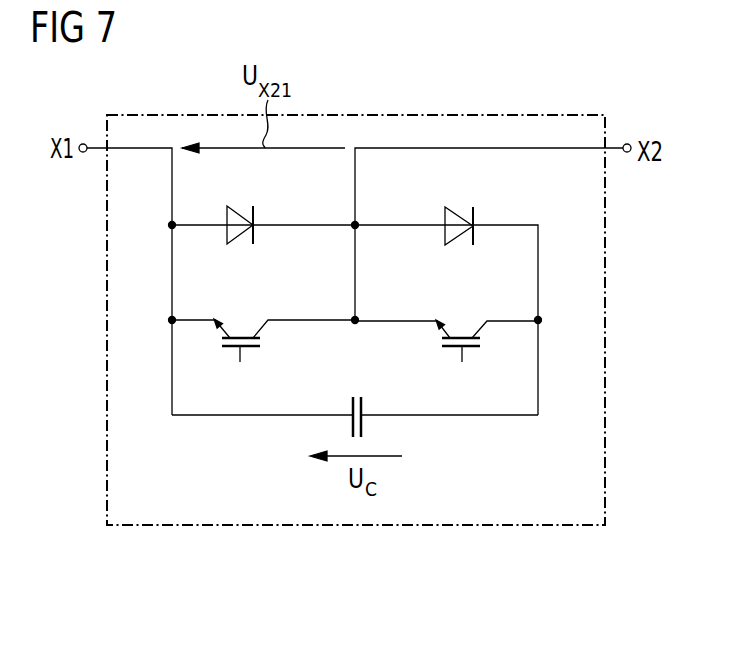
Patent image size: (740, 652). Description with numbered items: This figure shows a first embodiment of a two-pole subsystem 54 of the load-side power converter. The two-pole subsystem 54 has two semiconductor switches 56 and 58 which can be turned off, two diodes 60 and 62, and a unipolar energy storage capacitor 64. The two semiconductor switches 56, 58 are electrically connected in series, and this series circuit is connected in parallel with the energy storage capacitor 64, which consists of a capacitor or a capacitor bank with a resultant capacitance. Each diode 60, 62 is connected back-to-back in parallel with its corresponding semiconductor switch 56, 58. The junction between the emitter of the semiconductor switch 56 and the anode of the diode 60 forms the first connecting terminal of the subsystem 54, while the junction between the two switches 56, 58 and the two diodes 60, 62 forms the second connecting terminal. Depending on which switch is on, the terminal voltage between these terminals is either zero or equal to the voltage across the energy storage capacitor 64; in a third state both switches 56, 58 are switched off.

The two-pole subsystem 54 is at (605, 315).
The semiconductor switch which can be turned off 56 is at (230, 348).
The semiconductor switch which can be turned off 58 is at (470, 350).
The diode 60 is at (253, 215).
The diode 62 is at (473, 216).
The unipolar energy storage capacitor 64 is at (361, 405).